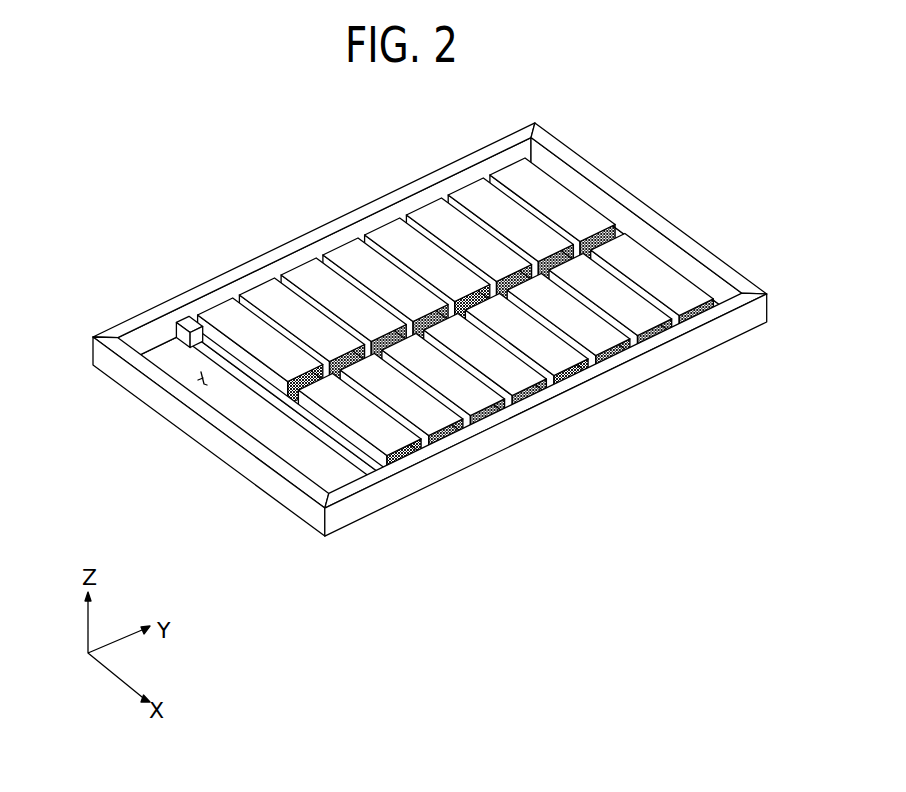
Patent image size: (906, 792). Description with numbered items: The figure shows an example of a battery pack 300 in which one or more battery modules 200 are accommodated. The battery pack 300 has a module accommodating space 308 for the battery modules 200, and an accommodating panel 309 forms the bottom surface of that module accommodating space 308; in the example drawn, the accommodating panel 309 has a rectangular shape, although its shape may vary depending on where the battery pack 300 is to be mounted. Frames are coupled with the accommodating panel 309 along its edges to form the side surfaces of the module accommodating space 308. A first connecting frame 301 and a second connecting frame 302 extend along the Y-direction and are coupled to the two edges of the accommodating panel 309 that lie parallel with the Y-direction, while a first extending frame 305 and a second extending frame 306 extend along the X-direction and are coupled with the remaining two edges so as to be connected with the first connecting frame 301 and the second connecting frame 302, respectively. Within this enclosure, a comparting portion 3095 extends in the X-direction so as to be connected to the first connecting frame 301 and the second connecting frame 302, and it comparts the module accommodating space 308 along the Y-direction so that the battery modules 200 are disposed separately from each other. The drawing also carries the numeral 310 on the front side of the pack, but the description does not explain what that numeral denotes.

The battery pack 300 is at (152, 168).
The battery module 200 is at (211, 315).
The first connecting frame 301 is at (340, 217).
The second connecting frame 302 is at (553, 393).
The first extending frame 305 is at (198, 412).
The second extending frame 306 is at (668, 220).
The module accommodating space 308 is at (196, 382).
The accommodating panel 309 is at (257, 417).
The comparting portion 3095 is at (305, 434).
The front side wall 310 is at (668, 372).